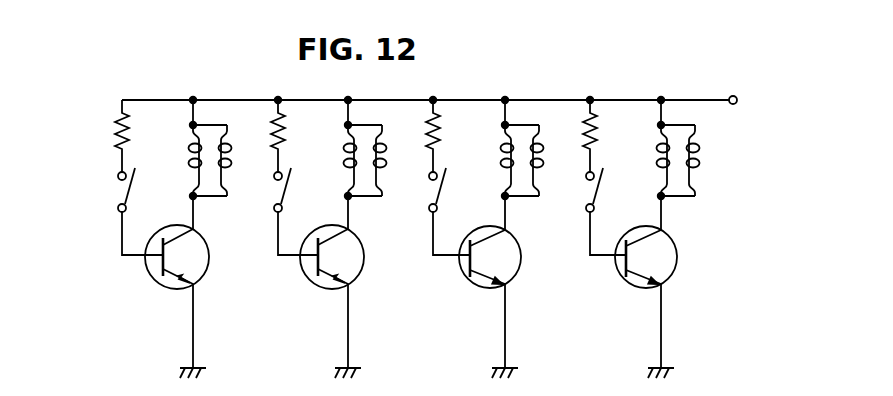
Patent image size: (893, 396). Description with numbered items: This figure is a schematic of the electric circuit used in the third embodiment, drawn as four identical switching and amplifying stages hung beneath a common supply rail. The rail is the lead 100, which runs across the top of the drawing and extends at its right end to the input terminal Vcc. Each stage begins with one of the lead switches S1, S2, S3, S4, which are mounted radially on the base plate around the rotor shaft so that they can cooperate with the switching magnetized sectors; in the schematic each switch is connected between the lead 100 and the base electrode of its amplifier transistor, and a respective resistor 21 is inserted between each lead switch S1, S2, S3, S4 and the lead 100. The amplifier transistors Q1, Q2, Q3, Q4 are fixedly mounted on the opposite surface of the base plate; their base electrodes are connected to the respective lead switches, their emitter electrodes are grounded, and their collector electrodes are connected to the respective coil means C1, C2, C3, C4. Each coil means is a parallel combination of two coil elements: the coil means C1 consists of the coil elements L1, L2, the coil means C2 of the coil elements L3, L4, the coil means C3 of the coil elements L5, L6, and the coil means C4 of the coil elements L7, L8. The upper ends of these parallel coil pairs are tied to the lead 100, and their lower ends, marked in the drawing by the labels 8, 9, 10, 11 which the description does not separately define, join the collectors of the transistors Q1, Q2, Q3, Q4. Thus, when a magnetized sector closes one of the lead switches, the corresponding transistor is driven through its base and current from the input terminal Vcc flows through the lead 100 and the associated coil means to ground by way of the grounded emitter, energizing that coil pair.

The lead 100 is at (462, 100).
The resistor 21 is at (116, 134).
The input terminal Vcc is at (751, 116).
The lead switch S1 is at (140, 195).
The lead switch S2 is at (296, 195).
The lead switch S3 is at (451, 195).
The lead switch S4 is at (608, 195).
The coil means C1 is at (222, 124).
The coil means C2 is at (374, 124).
The coil means C3 is at (527, 124).
The coil means C4 is at (682, 124).
The coil element L1 is at (189, 149).
The coil element L2 is at (244, 151).
The coil element L3 is at (345, 149).
The coil element L4 is at (399, 151).
The coil element L5 is at (502, 149).
The coil element L6 is at (556, 151).
The coil element L7 is at (658, 149).
The coil element L8 is at (702, 155).
The amplifier transistor Q1 is at (207, 272).
The amplifier transistor Q2 is at (362, 272).
The amplifier transistor Q3 is at (519, 272).
The amplifier transistor Q4 is at (675, 272).
The tank circuit 8 is at (210, 197).
The tank circuit 9 is at (366, 197).
The tank circuit 10 is at (520, 197).
The tank circuit 11 is at (677, 197).